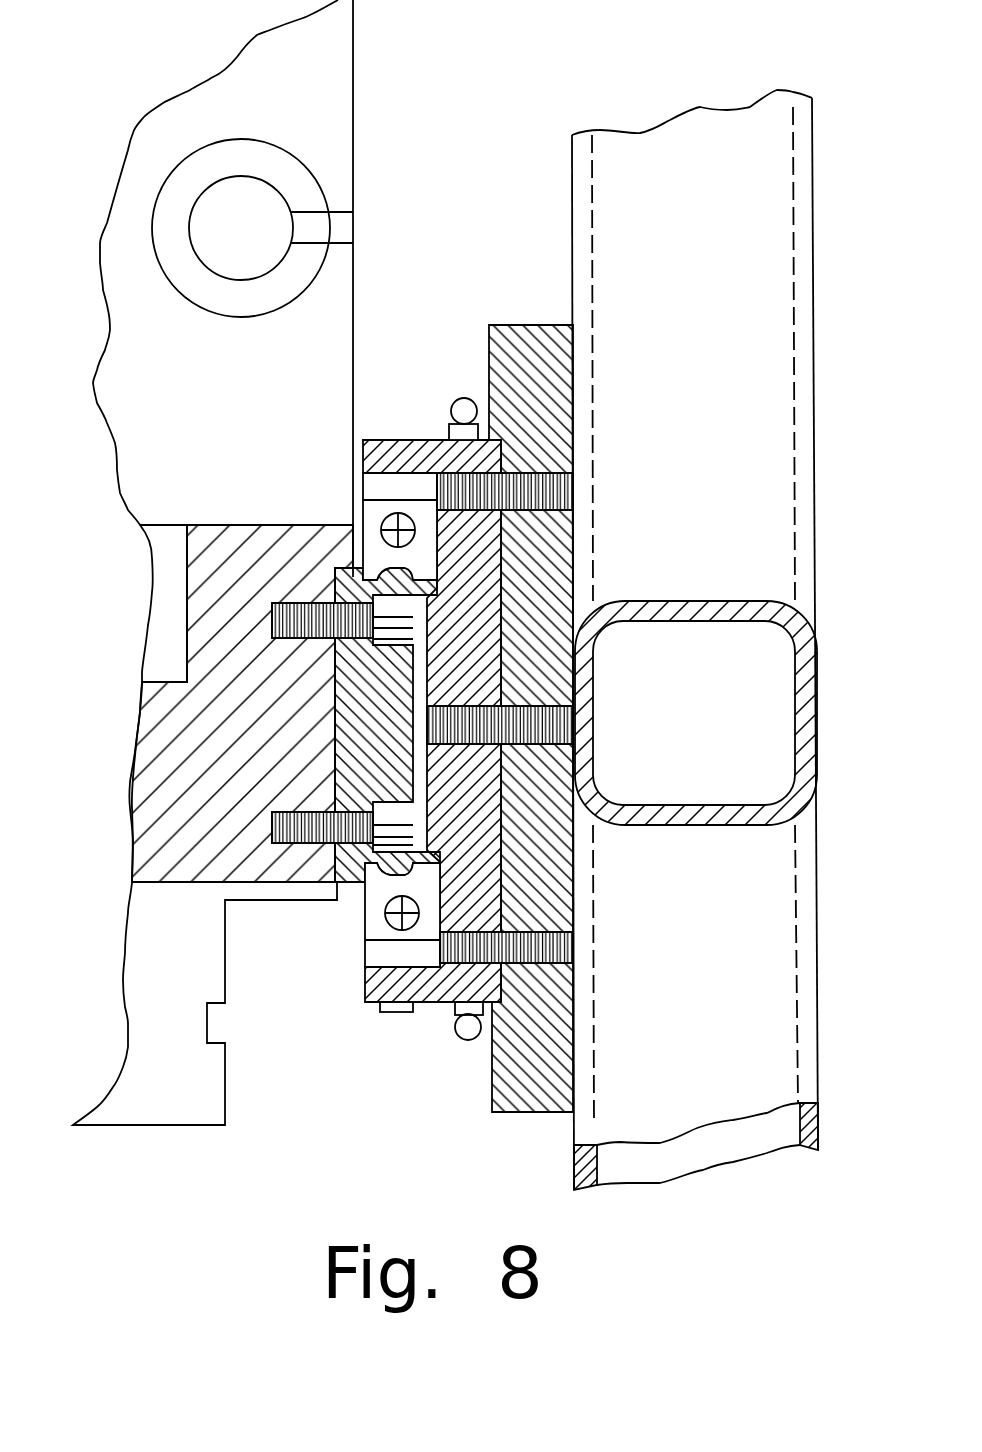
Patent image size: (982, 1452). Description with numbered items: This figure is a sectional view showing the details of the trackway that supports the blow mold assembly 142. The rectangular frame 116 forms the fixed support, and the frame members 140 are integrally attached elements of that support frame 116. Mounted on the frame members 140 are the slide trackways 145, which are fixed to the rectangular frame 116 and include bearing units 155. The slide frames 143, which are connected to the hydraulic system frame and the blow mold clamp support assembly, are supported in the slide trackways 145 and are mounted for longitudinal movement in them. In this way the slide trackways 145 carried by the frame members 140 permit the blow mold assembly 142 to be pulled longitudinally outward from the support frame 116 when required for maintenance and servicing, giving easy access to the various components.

The rectangular frame 116 is at (783, 402).
The frame members 140 is at (522, 353).
The blow mold assembly 142 is at (337, 312).
The slide frames 143 is at (367, 730).
The slide trackways 145 is at (430, 978).
The bearing units 155 is at (373, 520).